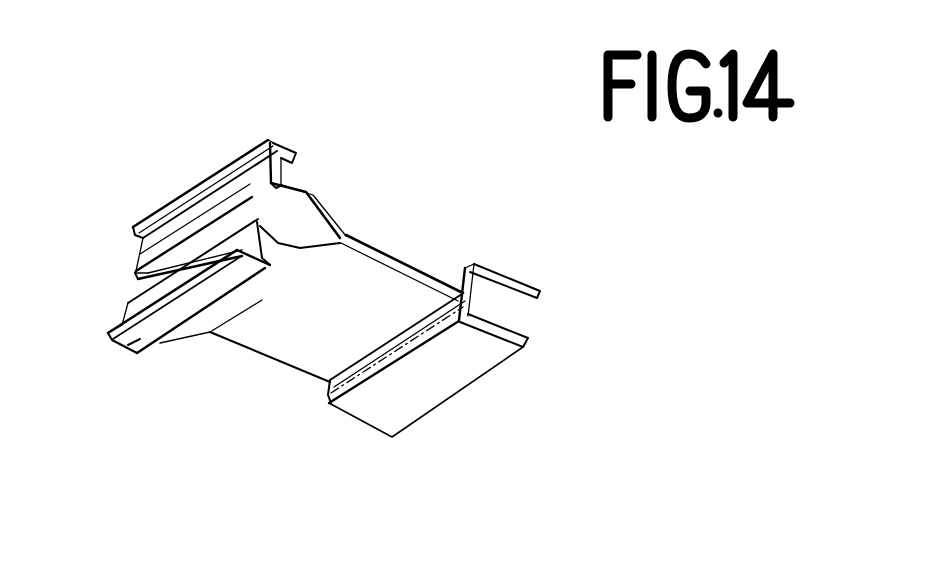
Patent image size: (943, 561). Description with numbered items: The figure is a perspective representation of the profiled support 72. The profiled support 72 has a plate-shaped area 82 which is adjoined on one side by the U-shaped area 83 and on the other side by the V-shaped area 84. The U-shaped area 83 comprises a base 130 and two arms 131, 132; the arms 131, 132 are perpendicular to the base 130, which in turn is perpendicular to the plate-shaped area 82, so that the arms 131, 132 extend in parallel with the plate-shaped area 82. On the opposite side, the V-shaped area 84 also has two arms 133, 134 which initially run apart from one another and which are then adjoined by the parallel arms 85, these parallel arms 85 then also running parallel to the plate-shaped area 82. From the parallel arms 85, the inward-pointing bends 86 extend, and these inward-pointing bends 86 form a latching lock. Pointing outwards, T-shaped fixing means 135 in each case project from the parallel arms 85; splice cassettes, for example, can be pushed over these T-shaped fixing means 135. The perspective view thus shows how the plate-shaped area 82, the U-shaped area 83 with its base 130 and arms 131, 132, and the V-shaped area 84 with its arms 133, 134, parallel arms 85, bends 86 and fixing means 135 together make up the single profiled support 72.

The profiled support 72 is at (548, 244).
The plate-shaped area 82 is at (313, 352).
The U-shaped area 83 is at (536, 325).
The V-shaped area 84 is at (352, 224).
The parallel arms 85 is at (298, 178).
The inward-pointing bends 86 is at (268, 186).
The base 130 is at (464, 282).
The arm 131 is at (443, 395).
The arm 132 is at (532, 290).
The arm 133 is at (314, 265).
The arm 134 is at (322, 204).
The T-shaped fixing means 135 is at (283, 150).